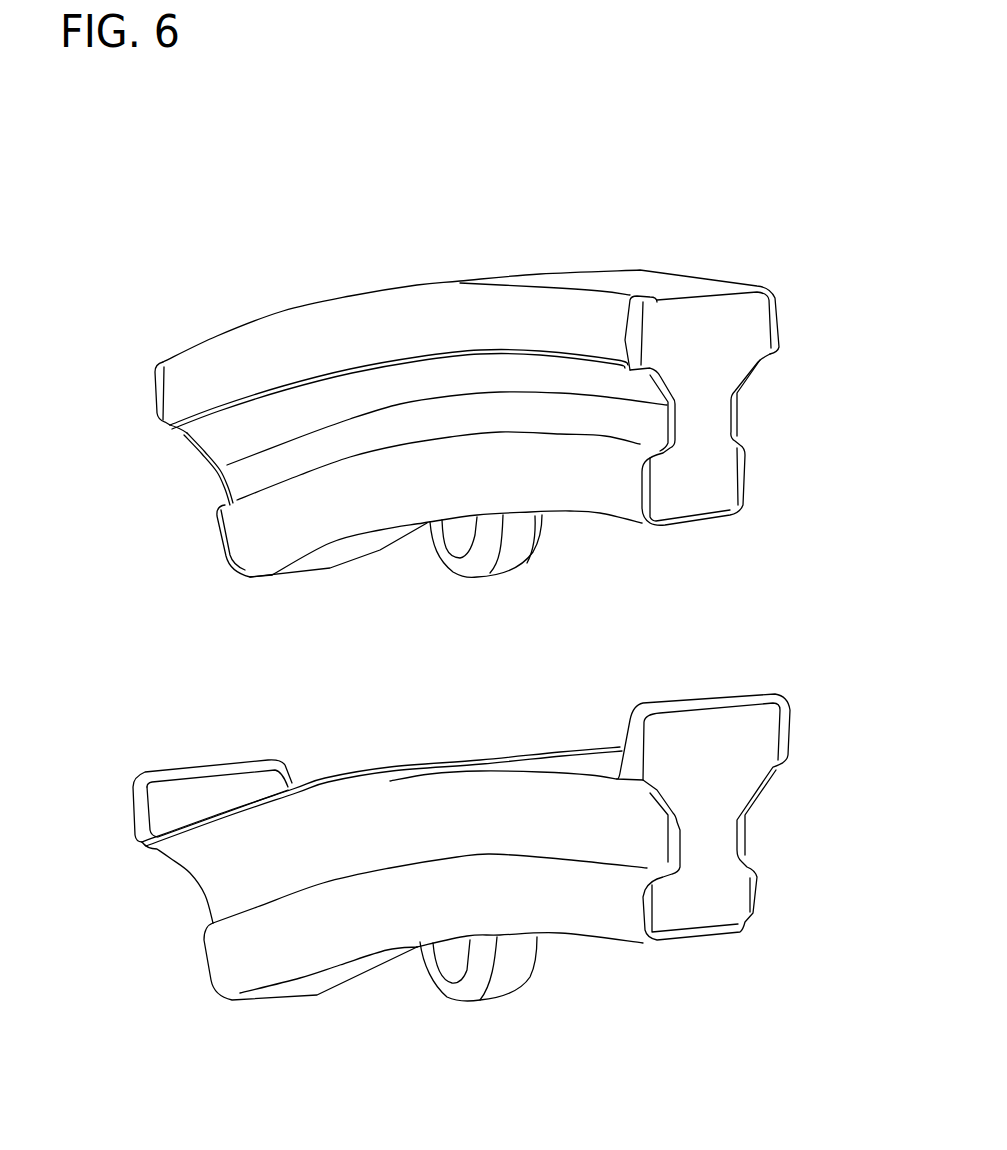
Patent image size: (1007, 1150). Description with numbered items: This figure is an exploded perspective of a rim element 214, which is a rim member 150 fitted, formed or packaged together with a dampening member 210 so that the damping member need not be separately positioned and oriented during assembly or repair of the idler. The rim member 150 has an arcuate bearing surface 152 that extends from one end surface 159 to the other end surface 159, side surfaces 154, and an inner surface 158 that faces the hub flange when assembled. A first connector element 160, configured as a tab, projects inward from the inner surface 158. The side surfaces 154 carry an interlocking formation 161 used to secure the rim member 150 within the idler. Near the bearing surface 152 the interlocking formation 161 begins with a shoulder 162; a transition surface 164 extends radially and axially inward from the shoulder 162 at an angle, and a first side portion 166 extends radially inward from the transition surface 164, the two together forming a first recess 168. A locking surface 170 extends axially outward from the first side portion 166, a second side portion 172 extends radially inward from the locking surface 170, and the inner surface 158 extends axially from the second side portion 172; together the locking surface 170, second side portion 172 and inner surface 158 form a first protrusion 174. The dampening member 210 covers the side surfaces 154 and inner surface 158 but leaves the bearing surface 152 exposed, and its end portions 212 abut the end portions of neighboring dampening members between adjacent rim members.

The rim member 150 is at (255, 322).
The bearing surface 152 is at (643, 279).
The side surfaces 154 is at (212, 456).
The inner surface 158 is at (303, 565).
The end surfaces 159 is at (233, 490).
The first connector element 160 is at (473, 575).
The interlocking formation 161 is at (493, 398).
The shoulder 162 is at (183, 436).
The transition surface 164 is at (553, 373).
The first side portion 166 is at (647, 420).
The first recess 168 is at (367, 443).
The locking surface 170 is at (612, 437).
The second side portion 172 is at (242, 557).
The first protrusion 174 is at (216, 531).
The dampening member 210 is at (225, 1002).
The end portions 212 is at (717, 907).
The rim element 214 is at (780, 150).